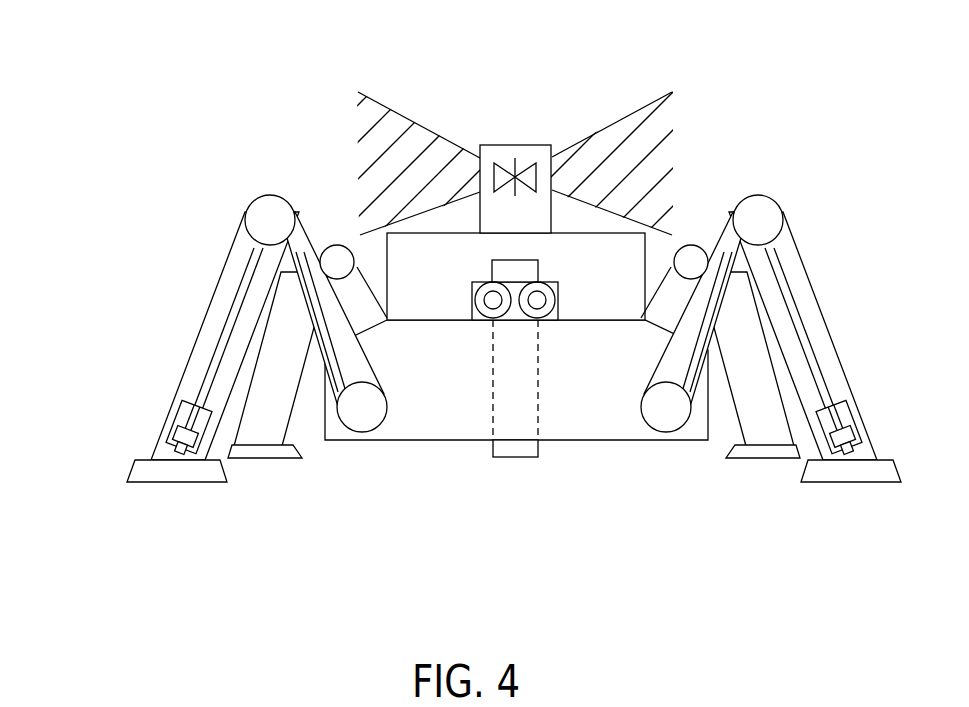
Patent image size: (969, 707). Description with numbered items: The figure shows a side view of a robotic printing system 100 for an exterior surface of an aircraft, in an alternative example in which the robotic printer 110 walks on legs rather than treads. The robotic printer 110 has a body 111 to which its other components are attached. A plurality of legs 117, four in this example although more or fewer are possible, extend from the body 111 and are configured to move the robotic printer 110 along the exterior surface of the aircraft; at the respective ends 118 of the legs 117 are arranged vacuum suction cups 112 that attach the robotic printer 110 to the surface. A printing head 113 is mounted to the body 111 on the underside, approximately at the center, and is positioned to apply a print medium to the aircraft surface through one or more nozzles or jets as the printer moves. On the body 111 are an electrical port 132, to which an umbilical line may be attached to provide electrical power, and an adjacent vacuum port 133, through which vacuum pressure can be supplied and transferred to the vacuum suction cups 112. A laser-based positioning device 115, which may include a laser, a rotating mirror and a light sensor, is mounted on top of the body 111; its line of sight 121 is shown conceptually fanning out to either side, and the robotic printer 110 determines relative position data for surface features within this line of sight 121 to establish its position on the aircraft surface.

The robotic printing system 100 is at (97, 92).
The robotic printer 110 is at (560, 150).
The body 111 is at (418, 233).
The vacuum suction cup 112 is at (192, 482).
The printing head 113 is at (520, 458).
The laser-based positioning device 115 is at (536, 145).
The leg 117 is at (270, 195).
The end of leg 118 is at (153, 457).
The line of sight 121 is at (404, 112).
The electrical port 132 is at (470, 283).
The vacuum port 133 is at (562, 301).